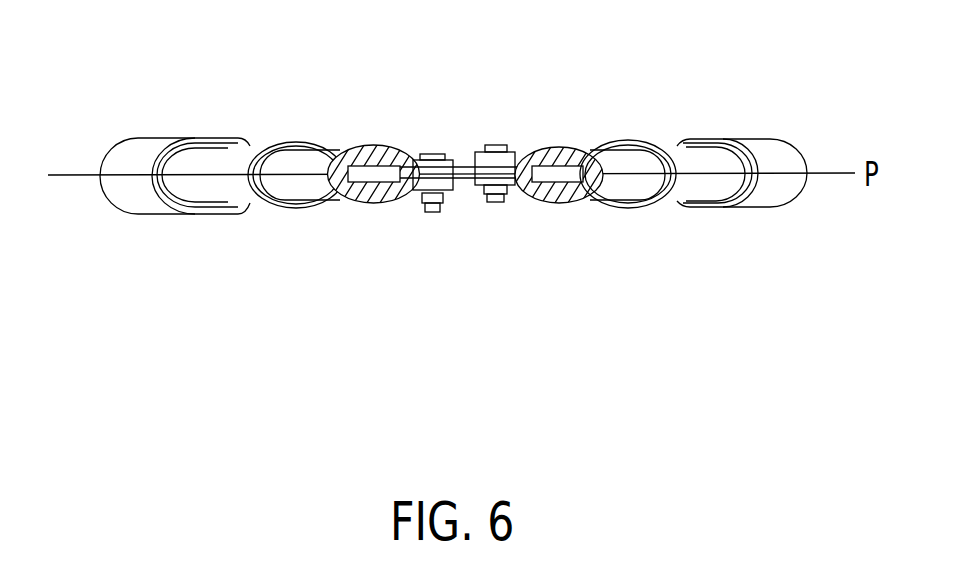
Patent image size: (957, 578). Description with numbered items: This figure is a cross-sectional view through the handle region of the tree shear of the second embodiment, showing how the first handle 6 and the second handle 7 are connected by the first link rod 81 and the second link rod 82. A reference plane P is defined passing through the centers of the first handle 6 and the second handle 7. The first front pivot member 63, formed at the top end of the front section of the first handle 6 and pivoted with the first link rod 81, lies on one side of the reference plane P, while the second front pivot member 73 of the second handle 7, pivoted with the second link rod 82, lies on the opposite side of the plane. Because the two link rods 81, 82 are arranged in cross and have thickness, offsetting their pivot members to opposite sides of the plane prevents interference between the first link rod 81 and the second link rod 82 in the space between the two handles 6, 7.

The first handle 6 is at (762, 62).
The second handle 7 is at (297, 112).
The first front pivot member 63 is at (537, 68).
The second front pivot member 73 is at (396, 252).
The first link rod 81 is at (454, 156).
The second link rod 82 is at (457, 252).